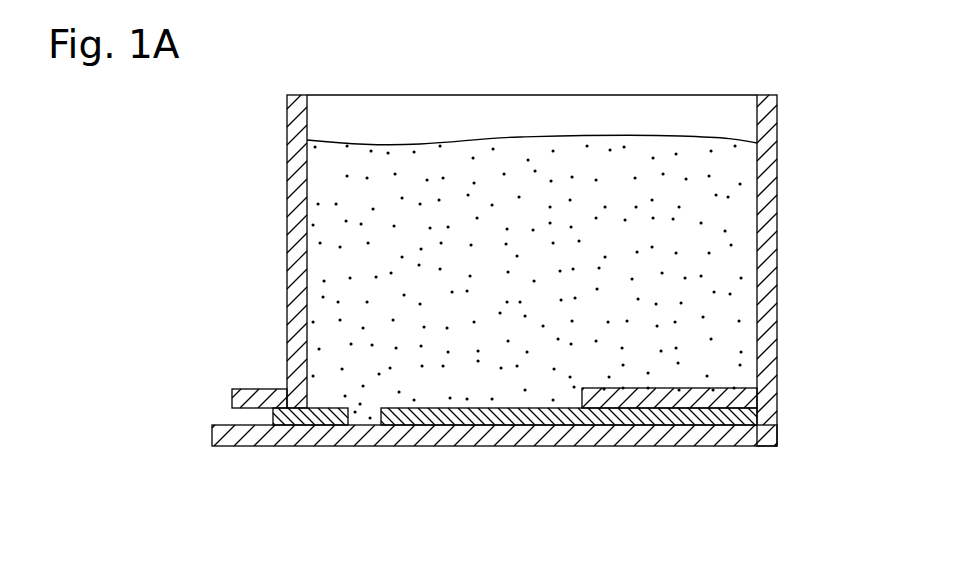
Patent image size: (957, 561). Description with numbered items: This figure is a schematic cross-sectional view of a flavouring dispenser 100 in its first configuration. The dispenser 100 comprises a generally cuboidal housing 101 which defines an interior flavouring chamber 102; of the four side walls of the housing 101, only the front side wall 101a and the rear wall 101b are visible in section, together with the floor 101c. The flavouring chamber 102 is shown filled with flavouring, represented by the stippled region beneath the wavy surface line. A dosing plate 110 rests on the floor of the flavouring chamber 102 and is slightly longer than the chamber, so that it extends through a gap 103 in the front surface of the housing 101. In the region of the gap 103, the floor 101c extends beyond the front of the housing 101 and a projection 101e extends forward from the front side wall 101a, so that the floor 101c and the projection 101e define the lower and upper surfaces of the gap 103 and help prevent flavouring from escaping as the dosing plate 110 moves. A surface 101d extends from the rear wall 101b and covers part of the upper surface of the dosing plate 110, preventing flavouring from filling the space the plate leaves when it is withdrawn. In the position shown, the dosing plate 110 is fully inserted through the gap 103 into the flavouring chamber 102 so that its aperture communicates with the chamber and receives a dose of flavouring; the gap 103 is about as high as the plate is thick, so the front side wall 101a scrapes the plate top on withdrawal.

The flavouring dispenser 100 is at (256, 146).
The housing 101 is at (777, 196).
The front side wall 101a is at (297, 240).
The rear wall 101b is at (777, 288).
The floor 101c is at (682, 437).
The surface 101d is at (702, 392).
The projection 101e is at (250, 392).
The flavouring chamber 102 is at (497, 117).
The gap 103 is at (220, 415).
The dosing plate 110 is at (455, 445).